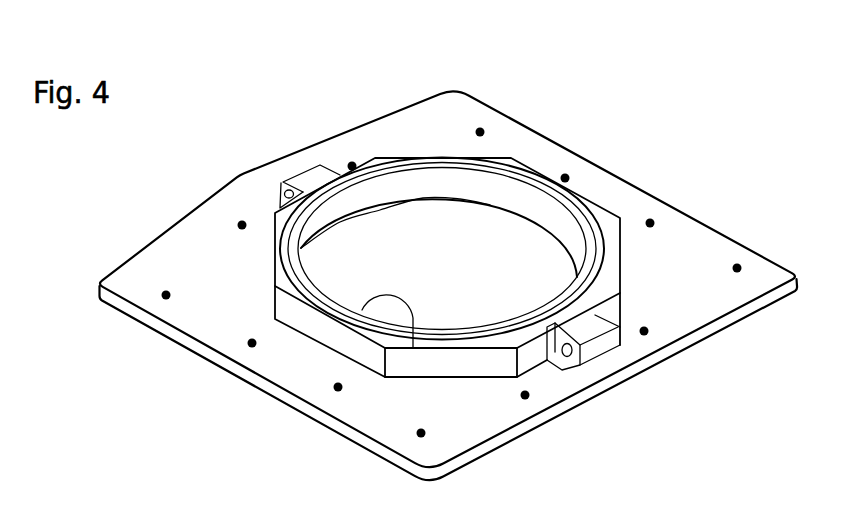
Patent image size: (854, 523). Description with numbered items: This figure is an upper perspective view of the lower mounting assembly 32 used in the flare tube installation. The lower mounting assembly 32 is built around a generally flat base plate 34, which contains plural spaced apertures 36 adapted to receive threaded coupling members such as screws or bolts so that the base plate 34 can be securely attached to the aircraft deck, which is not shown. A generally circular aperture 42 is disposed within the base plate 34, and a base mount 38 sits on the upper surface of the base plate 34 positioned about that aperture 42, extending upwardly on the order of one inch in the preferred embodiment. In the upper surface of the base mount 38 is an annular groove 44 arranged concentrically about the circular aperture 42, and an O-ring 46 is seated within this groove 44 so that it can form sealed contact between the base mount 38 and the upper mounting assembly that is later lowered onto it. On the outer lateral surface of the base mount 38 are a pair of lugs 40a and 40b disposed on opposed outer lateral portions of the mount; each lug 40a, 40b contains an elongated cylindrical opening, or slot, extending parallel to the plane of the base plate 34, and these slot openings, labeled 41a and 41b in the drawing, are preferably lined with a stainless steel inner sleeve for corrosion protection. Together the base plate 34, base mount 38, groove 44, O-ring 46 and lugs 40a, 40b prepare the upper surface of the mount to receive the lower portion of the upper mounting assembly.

The lower mounting assembly 32 is at (136, 343).
The base plate 34 is at (210, 325).
The apertures 36 is at (335, 388).
The base mount 38 is at (277, 277).
The first lug 40a is at (603, 337).
The second lug 40b is at (308, 170).
The tab hole 41a is at (567, 360).
The tab hole 41b is at (280, 195).
The circular aperture 42 is at (413, 330).
The annular groove 44 is at (433, 157).
The O-ring 46 is at (489, 157).